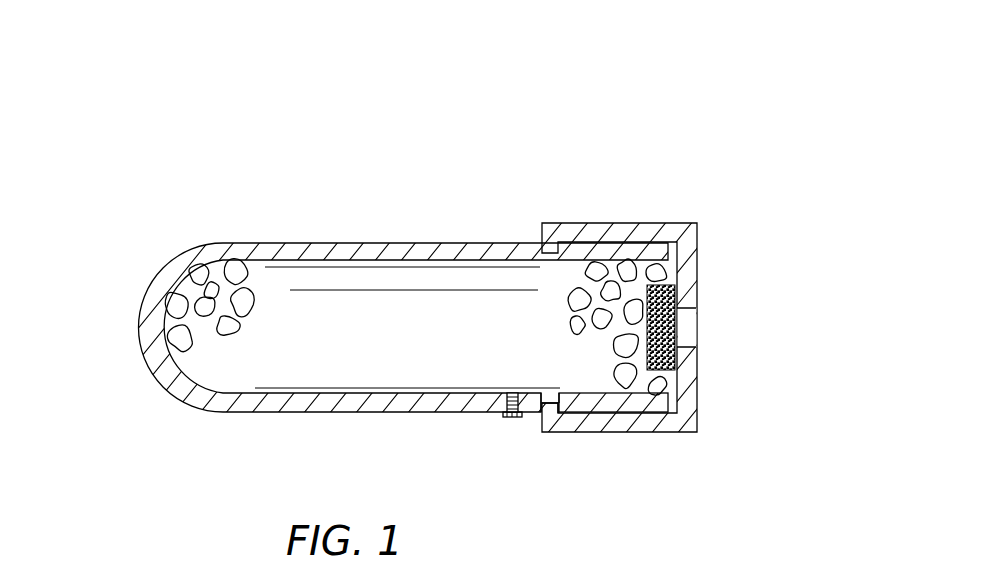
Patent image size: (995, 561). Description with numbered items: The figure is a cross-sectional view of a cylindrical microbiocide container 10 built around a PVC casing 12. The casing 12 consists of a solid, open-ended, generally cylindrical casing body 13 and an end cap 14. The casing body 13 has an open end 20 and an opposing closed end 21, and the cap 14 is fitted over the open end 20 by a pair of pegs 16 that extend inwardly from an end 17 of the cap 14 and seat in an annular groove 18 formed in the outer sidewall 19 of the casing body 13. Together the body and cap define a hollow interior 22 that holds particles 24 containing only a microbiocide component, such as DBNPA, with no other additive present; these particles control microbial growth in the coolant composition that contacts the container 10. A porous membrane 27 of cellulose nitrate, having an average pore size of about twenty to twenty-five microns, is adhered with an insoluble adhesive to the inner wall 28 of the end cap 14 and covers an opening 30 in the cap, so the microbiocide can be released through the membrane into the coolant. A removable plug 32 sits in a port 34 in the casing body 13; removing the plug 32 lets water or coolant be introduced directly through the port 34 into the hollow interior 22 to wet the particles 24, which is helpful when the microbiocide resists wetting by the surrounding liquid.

The container 10 is at (372, 180).
The PVC casing 12 is at (208, 225).
The casing body 13 is at (321, 236).
The end cap 14 is at (703, 316).
The pegs 16 is at (543, 415).
The end of the cap 17 is at (550, 422).
The annular groove 18 is at (543, 393).
The outer sidewall 19 is at (357, 413).
The open end 20 is at (673, 393).
The closed end 21 is at (155, 362).
The hollow interior 22 is at (361, 326).
The particles 24 is at (173, 302).
The porous membrane 27 is at (660, 296).
The inner wall 28 is at (700, 253).
The opening 30 is at (687, 332).
The removable plug 32 is at (508, 392).
The port 34 is at (505, 408).